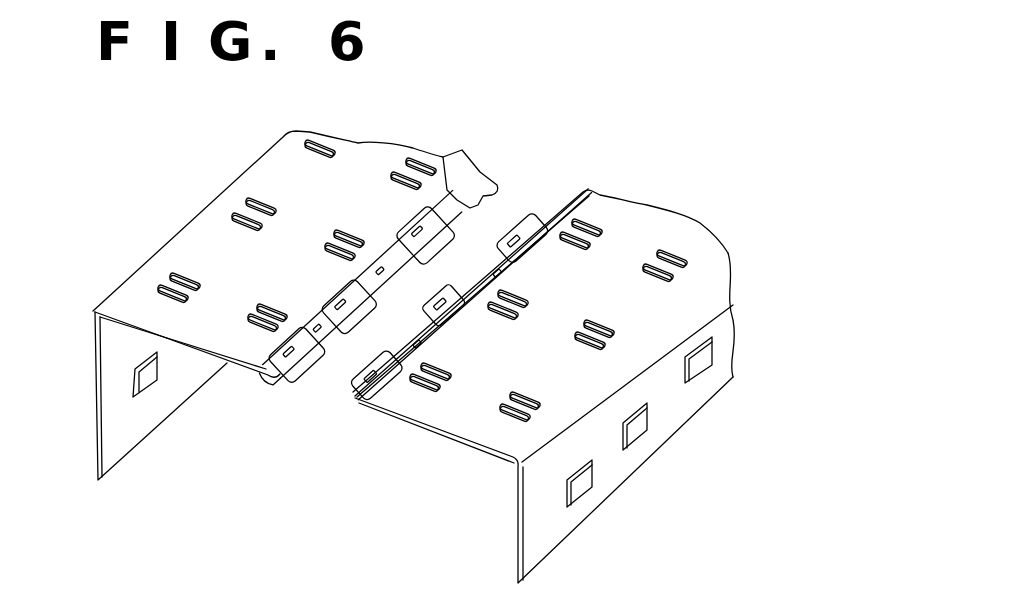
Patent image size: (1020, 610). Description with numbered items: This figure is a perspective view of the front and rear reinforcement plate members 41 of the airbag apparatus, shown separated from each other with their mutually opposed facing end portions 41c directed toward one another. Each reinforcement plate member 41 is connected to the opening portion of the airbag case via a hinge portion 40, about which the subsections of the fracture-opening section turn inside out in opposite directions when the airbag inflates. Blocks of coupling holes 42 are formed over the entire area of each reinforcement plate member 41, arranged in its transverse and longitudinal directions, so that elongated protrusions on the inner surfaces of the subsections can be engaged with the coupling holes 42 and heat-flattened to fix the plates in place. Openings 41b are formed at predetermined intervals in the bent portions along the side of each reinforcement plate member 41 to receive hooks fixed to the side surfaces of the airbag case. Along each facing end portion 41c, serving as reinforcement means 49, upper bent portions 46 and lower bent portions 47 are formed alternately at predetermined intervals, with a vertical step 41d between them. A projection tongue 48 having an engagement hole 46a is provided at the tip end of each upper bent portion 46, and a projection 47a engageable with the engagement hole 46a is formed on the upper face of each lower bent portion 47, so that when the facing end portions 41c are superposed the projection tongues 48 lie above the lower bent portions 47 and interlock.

The hinge portion 40 is at (183, 230).
The reinforcement plate member 41 is at (264, 182).
The opening 41b is at (576, 485).
The facing end portion 41c is at (480, 183).
The vertical step 41d is at (446, 180).
The coupling hole 42 is at (178, 272).
The upper bent portion 46 is at (403, 250).
The engagement hole 46a is at (347, 306).
The lower bent portion 47 is at (312, 372).
The projection 47a is at (262, 390).
The projection tongue 48 is at (436, 243).
The reinforcement means 49 is at (577, 171).